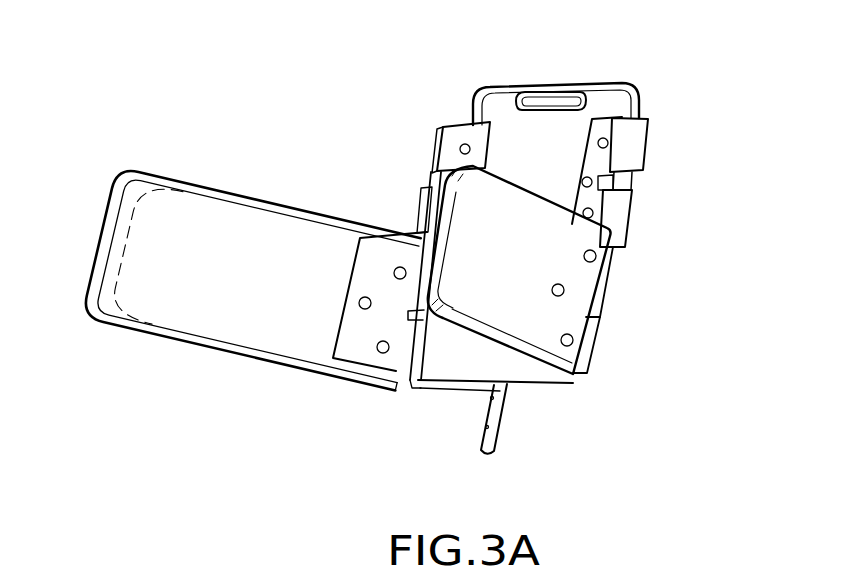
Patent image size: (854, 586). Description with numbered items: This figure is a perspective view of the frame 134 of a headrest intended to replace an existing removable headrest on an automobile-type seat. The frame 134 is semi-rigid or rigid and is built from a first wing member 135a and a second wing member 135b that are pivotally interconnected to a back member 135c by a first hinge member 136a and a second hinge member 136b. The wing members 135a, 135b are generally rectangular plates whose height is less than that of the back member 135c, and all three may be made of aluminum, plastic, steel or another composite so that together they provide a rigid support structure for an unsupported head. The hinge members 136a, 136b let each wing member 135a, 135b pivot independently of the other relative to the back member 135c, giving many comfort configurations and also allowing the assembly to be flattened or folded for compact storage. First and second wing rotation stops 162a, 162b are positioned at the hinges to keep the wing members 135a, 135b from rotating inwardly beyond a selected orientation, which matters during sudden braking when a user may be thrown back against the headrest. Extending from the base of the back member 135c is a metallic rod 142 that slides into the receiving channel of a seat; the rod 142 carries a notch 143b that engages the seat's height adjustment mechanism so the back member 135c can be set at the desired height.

The frame 134 is at (196, 79).
The first wing member 135a is at (497, 317).
The second wing member 135b is at (205, 296).
The back member 135c is at (603, 93).
The first hinge member 136a is at (592, 352).
The second hinge member 136b is at (380, 252).
The rod 142 is at (488, 427).
The notch 143b is at (422, 378).
The first wing rotation stop 162a is at (600, 310).
The second wing rotation stop 162b is at (407, 350).